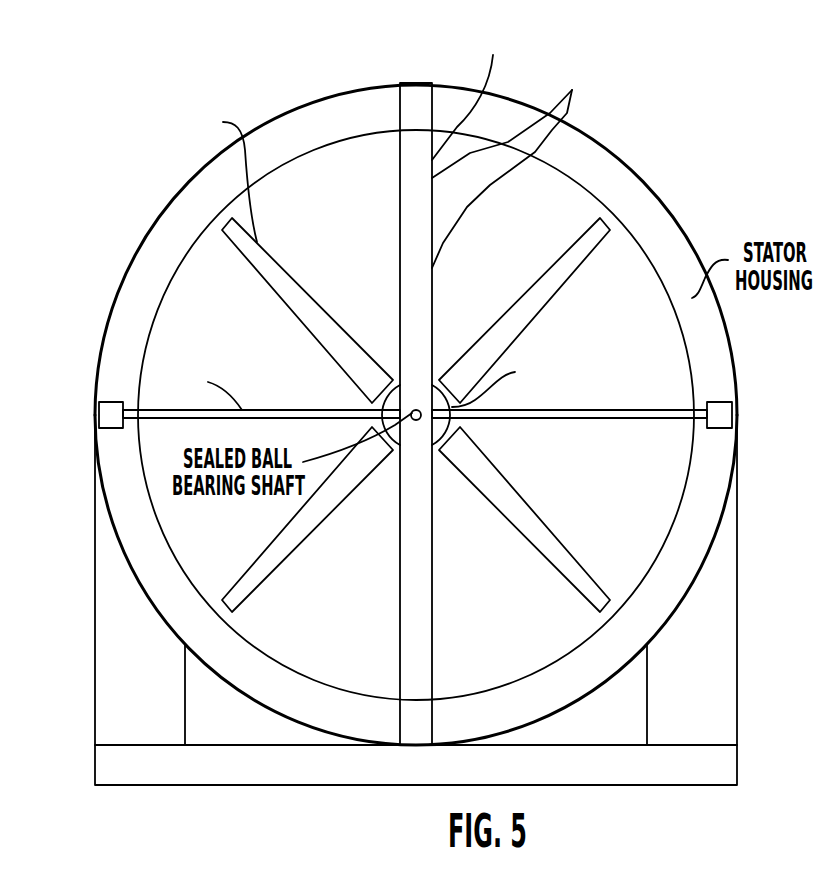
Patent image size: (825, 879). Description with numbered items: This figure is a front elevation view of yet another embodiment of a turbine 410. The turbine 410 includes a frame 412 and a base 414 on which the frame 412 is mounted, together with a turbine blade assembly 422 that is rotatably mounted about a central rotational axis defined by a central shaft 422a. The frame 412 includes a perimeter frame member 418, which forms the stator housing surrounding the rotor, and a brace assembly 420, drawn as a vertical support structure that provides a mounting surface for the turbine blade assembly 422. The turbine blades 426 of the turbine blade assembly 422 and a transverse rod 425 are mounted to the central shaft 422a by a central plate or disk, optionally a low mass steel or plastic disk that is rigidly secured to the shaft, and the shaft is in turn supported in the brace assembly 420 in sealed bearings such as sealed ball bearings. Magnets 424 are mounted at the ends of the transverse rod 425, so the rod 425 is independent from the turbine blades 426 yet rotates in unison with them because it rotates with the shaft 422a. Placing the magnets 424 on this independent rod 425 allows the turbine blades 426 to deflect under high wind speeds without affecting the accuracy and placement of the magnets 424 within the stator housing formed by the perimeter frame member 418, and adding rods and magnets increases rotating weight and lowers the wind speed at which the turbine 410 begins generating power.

The turbine 410 is at (617, 130).
The frame 412 is at (652, 210).
The base 414 is at (218, 772).
The perimeter frame member 418 is at (710, 465).
The brace assembly 420 is at (502, 384).
The turbine blade assembly 422 is at (332, 300).
The central shaft 422a is at (378, 409).
The magnets 424 is at (108, 402).
The transverse rod 425 is at (155, 422).
The turbine blades 426 is at (240, 252).